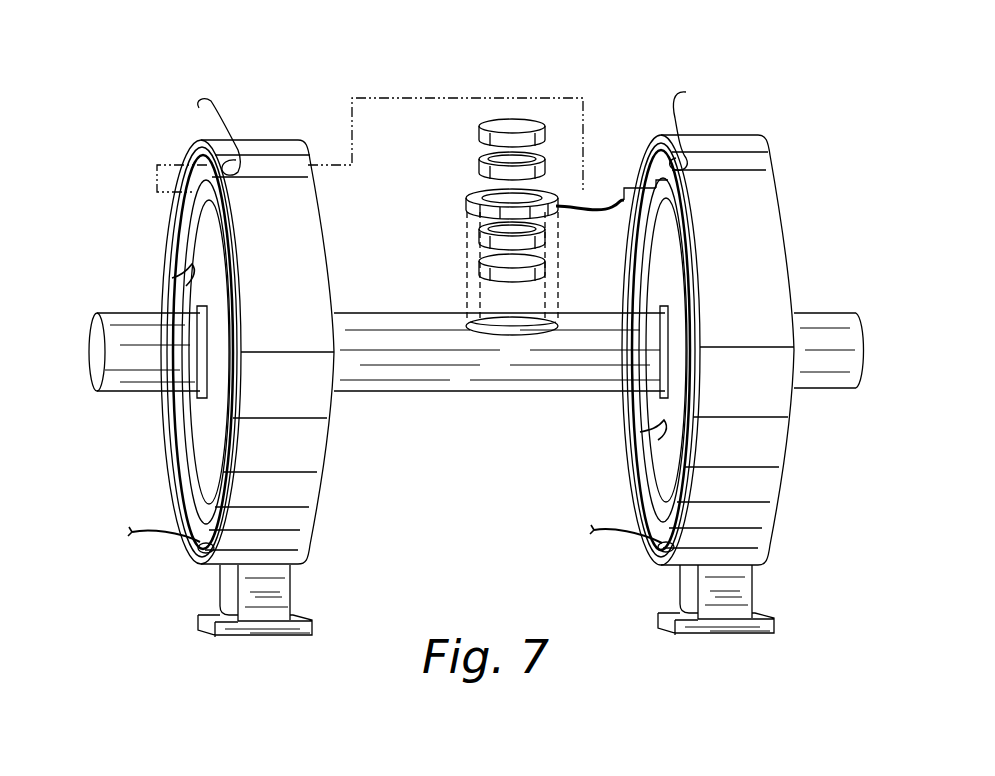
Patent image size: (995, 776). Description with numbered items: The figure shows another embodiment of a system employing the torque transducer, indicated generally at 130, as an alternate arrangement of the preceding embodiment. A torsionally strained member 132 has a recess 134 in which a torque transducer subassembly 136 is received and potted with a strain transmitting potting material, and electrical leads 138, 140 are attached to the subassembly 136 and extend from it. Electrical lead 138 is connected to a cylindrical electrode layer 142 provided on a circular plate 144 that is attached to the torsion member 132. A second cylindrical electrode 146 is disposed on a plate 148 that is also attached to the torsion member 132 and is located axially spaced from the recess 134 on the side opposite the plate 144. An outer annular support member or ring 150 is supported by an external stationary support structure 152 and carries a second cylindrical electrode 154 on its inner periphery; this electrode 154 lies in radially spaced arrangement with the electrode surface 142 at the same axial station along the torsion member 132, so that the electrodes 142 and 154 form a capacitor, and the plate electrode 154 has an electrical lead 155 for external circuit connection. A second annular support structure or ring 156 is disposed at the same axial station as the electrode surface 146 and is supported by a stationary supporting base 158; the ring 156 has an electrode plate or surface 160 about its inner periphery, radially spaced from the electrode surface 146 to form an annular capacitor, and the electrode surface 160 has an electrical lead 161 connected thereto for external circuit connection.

The system employing the torque transducer 130 is at (310, 62).
The torsionally strained member 132 is at (375, 392).
The recess 134 is at (512, 335).
The torque transducer subassembly 136 is at (453, 118).
The electrical lead 138 is at (556, 203).
The electrical lead 140 is at (585, 208).
The cylindrical electrode layer 142 is at (223, 131).
The circular plate 144 is at (172, 278).
The second cylindrical electrode 146 is at (698, 124).
The plate 148 is at (640, 432).
The outer annular support member or ring 150 is at (250, 139).
The external stationary support structure 152 is at (278, 600).
The second cylindrical electrode 154 is at (200, 548).
The electrical lead 155 is at (162, 532).
The second annular support structure or ring 156 is at (735, 134).
The stationary supporting base 158 is at (742, 598).
The electrode plate or surface 160 is at (660, 549).
The electrical lead 161 is at (612, 530).